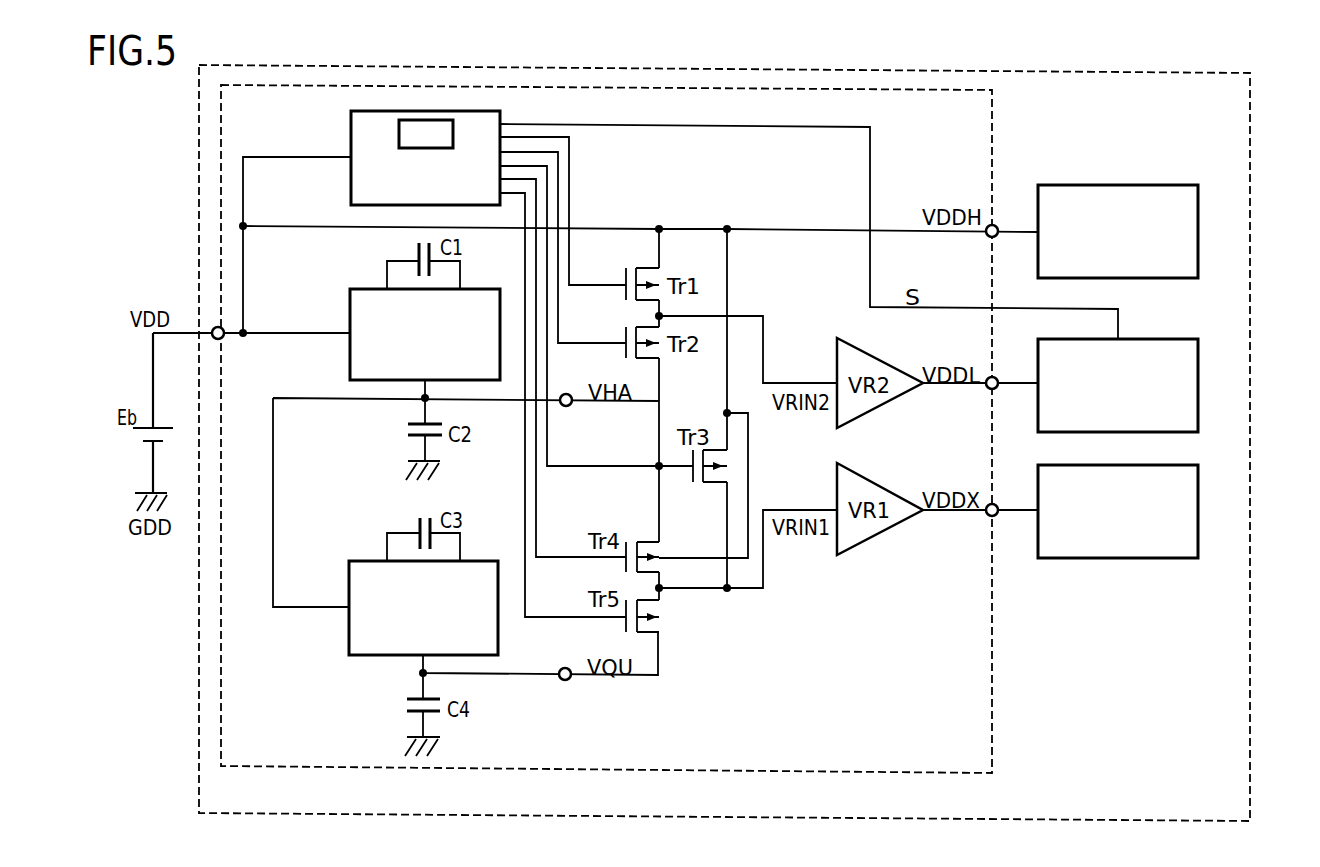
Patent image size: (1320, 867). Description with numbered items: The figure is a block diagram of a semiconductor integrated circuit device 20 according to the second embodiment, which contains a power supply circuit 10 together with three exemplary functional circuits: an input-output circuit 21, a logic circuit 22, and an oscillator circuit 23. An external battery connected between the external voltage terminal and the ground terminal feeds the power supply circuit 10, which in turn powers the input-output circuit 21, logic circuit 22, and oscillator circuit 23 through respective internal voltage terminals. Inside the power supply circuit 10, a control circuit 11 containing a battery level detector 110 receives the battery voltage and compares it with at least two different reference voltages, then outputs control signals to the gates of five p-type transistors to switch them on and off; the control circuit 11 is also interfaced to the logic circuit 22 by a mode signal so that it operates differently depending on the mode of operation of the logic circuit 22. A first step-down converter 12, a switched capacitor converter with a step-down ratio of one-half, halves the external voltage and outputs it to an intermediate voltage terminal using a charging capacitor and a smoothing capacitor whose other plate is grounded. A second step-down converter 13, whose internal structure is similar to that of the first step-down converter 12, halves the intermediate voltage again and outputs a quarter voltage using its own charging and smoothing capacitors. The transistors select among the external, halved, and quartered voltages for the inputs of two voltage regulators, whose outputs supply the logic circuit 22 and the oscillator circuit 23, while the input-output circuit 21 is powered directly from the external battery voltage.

The power supply circuit 10 is at (992, 125).
The control circuit 11 is at (351, 184).
The battery level detector 110 is at (399, 137).
The first step-down converter 12 is at (350, 356).
The second step-down converter 13 is at (349, 630).
The semiconductor integrated circuit device 20 is at (1250, 108).
The input-output (I/O) circuit 21 is at (1157, 183).
The logic circuit 22 is at (1157, 338).
The oscillator circuit 23 is at (1157, 465).